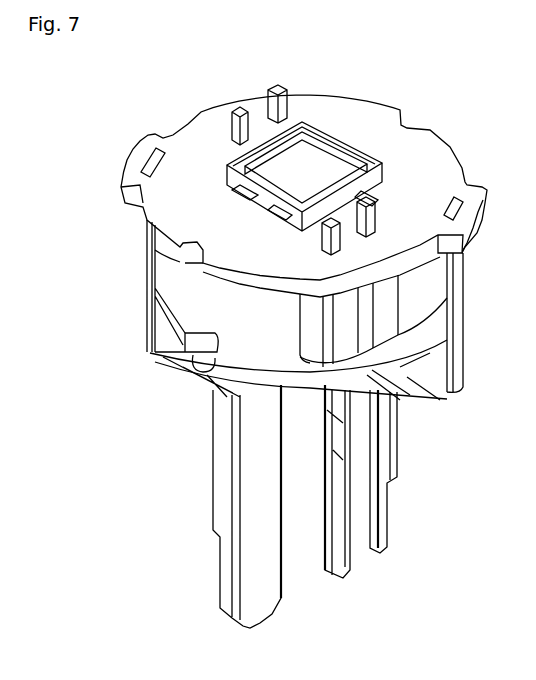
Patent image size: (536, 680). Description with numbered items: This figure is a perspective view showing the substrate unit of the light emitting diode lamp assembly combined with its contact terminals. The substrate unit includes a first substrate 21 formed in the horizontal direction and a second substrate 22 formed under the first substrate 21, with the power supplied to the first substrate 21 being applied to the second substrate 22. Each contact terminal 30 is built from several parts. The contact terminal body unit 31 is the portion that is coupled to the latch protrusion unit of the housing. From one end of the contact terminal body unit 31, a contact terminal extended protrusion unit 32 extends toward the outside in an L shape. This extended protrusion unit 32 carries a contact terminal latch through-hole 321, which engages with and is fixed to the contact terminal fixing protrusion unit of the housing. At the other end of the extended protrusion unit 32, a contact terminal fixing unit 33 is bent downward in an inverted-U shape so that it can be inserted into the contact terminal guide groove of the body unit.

The first substrate 21 is at (353, 110).
The second substrate 22 is at (420, 402).
The contact terminal 30 is at (460, 318).
The contact terminal body unit 31 is at (147, 292).
The contact terminal extended protrusion unit 32 is at (190, 352).
The contact terminal latch through-hole 321 is at (213, 352).
The contact terminal fixing unit 33 is at (247, 468).